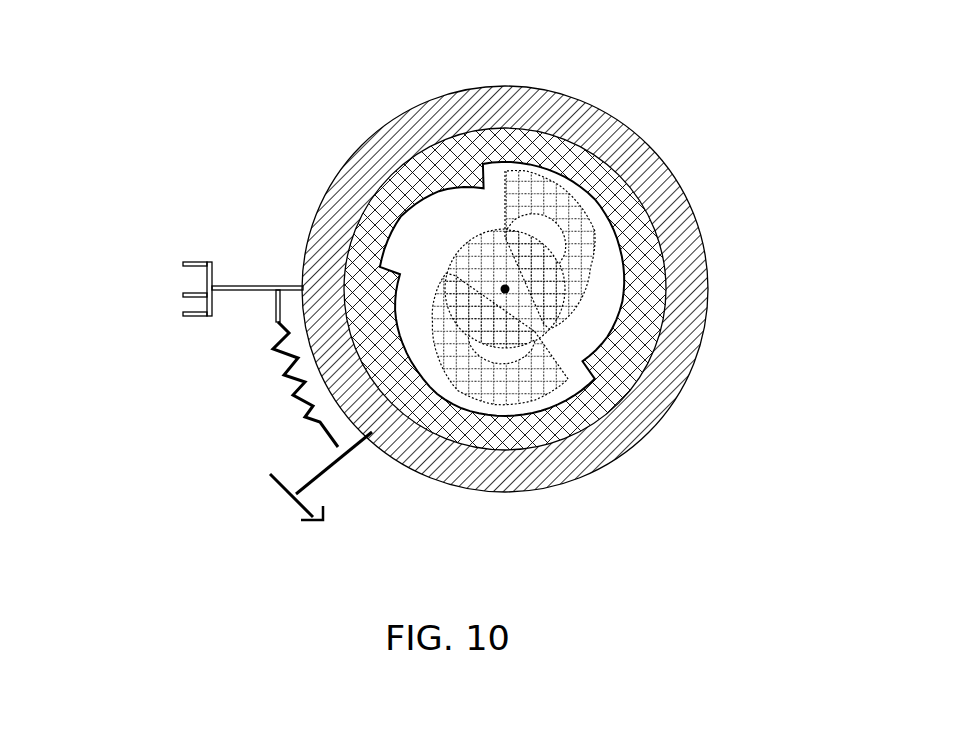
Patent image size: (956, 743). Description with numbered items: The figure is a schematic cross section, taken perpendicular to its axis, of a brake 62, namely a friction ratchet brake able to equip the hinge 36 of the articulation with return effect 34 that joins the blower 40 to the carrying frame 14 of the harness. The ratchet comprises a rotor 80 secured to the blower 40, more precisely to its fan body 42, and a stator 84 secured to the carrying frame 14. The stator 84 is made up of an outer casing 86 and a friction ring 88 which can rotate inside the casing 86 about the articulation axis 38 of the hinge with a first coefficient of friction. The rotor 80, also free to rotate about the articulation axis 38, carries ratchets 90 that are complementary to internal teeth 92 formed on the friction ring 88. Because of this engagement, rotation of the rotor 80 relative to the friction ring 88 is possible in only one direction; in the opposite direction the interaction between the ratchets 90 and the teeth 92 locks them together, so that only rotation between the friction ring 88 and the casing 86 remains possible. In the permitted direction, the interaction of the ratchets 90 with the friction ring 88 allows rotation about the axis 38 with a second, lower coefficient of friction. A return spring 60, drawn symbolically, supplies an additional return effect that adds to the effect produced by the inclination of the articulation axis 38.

The carrying frame 14 is at (190, 282).
The articulation with return effect 34 is at (556, 264).
The hinge 36 is at (556, 264).
The articulation axis 38 is at (505, 289).
The blower 40 is at (233, 476).
The fan body 42 is at (280, 484).
The return spring 60 is at (298, 389).
The brake 62 is at (464, 264).
The rotor 80 is at (455, 245).
The stator 84 is at (647, 445).
The casing 86 is at (482, 108).
The friction ring 88 is at (447, 160).
The ratchets 90 is at (535, 380).
The internal teeth 92 is at (590, 355).